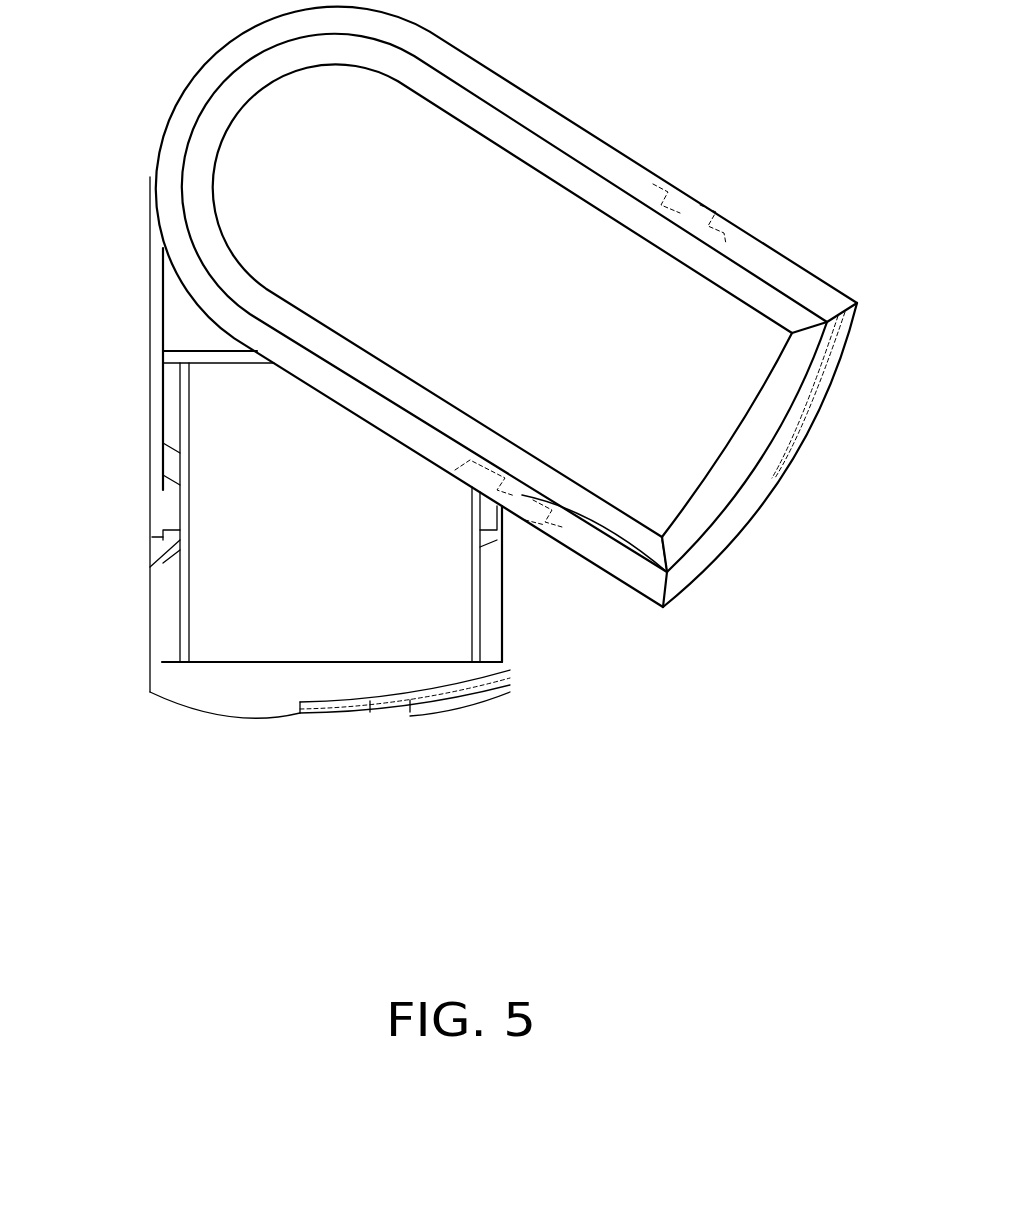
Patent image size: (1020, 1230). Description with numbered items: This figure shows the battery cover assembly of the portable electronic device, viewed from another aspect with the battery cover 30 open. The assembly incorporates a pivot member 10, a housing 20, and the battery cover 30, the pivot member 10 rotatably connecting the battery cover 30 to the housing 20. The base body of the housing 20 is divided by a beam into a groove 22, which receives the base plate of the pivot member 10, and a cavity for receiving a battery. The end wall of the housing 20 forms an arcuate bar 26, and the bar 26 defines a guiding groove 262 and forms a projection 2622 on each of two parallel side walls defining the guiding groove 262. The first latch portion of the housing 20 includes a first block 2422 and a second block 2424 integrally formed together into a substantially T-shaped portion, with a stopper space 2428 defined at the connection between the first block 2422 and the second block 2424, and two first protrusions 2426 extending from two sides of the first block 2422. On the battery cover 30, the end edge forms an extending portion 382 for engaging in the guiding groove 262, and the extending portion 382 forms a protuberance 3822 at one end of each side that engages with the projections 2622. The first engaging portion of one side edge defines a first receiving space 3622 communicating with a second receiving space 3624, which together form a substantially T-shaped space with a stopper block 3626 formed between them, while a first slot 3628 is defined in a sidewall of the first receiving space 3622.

The pivot member 10 is at (177, 320).
The housing 20 is at (187, 672).
The groove 22 is at (163, 267).
The arcuate bar 26 is at (412, 713).
The guiding groove 262 is at (367, 710).
The projection 2622 is at (335, 709).
The first block 2422 is at (158, 495).
The second block 2424 is at (173, 517).
The first protrusion 2426 is at (160, 445).
The stopper space 2428 is at (152, 567).
The battery cover 30 is at (528, 203).
The extending portion 382 is at (808, 415).
The protuberance 3822 is at (768, 483).
The first receiving space 3622 is at (498, 547).
The second receiving space 3624 is at (667, 572).
The stopper block 3626 is at (547, 507).
The first slot 3628 is at (537, 528).